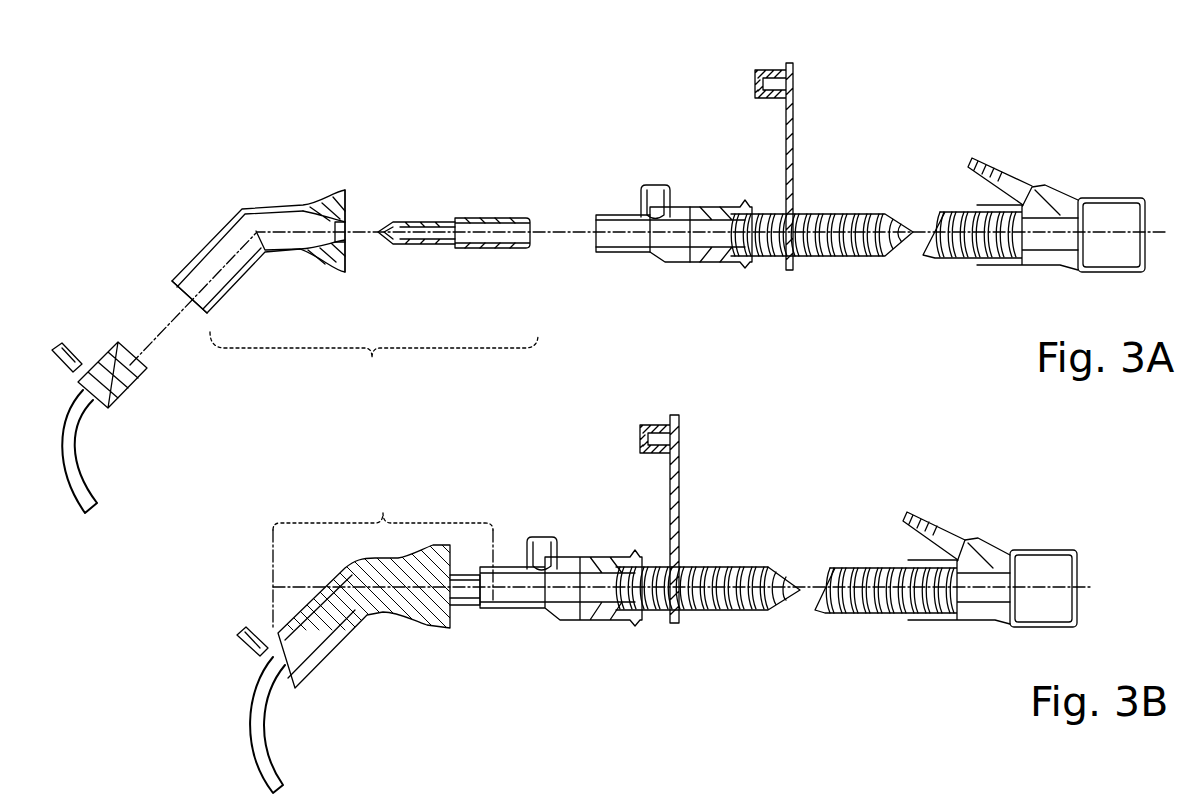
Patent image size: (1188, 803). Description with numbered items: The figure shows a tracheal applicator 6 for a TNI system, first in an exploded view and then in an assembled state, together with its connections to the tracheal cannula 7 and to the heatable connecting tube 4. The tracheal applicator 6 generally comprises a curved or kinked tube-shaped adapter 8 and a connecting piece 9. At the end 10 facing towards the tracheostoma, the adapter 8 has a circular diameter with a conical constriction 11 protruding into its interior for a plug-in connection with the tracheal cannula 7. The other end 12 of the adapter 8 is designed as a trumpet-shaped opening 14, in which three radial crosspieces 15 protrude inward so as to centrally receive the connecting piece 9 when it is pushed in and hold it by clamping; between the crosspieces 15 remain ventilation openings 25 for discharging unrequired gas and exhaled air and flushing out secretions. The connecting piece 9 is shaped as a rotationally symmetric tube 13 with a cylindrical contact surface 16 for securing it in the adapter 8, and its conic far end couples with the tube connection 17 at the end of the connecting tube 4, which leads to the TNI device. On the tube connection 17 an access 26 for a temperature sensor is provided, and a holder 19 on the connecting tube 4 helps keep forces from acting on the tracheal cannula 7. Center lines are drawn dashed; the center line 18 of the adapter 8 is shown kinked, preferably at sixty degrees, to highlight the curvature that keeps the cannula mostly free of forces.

In FIG. 3A, the connecting tube 4 is at (880, 212).
In FIG. 3B, the connecting tube 4 is at (760, 612).
In FIG. 3A, the tracheal applicator 6 is at (380, 393).
In FIG. 3B, the tracheal applicator 6 is at (389, 510).
In FIG. 3A, the tracheal cannula 7 is at (90, 455).
In FIG. 3A, the adapter 8 is at (242, 207).
In FIG. 3B, the adapter 8 is at (410, 612).
In FIG. 3A, the connecting piece 9 is at (478, 221).
In FIG. 3B, the connecting piece 9 is at (465, 602).
In FIG. 3A, the end facing towards the tracheostoma 10 is at (170, 250).
In FIG. 3A, the conical constriction 11 is at (197, 298).
In FIG. 3A, the other end of the adapter 12 is at (344, 186).
In FIG. 3A, the rotationally symmetric tube 13 is at (519, 221).
In FIG. 3A, the trumpet-shaped opening 14 is at (306, 204).
In FIG. 3A, the radial crosspieces 15 is at (348, 192).
In FIG. 3A, the cylindrical contact surface 16 is at (444, 221).
In FIG. 3A, the tube connection 17 is at (607, 214).
In FIG. 3B, the tube connection 17 is at (517, 602).
In FIG. 3A, the center line 18 is at (278, 236).
In FIG. 3B, the center line 18 is at (323, 646).
In FIG. 3A, the holder 19 is at (795, 160).
In FIG. 3B, the holder 19 is at (681, 510).
In FIG. 3A, the ventilation openings 25 is at (350, 253).
In FIG. 3A, the access for a temperature sensor 26 is at (657, 191).
In FIG. 3B, the access for a temperature sensor 26 is at (546, 545).